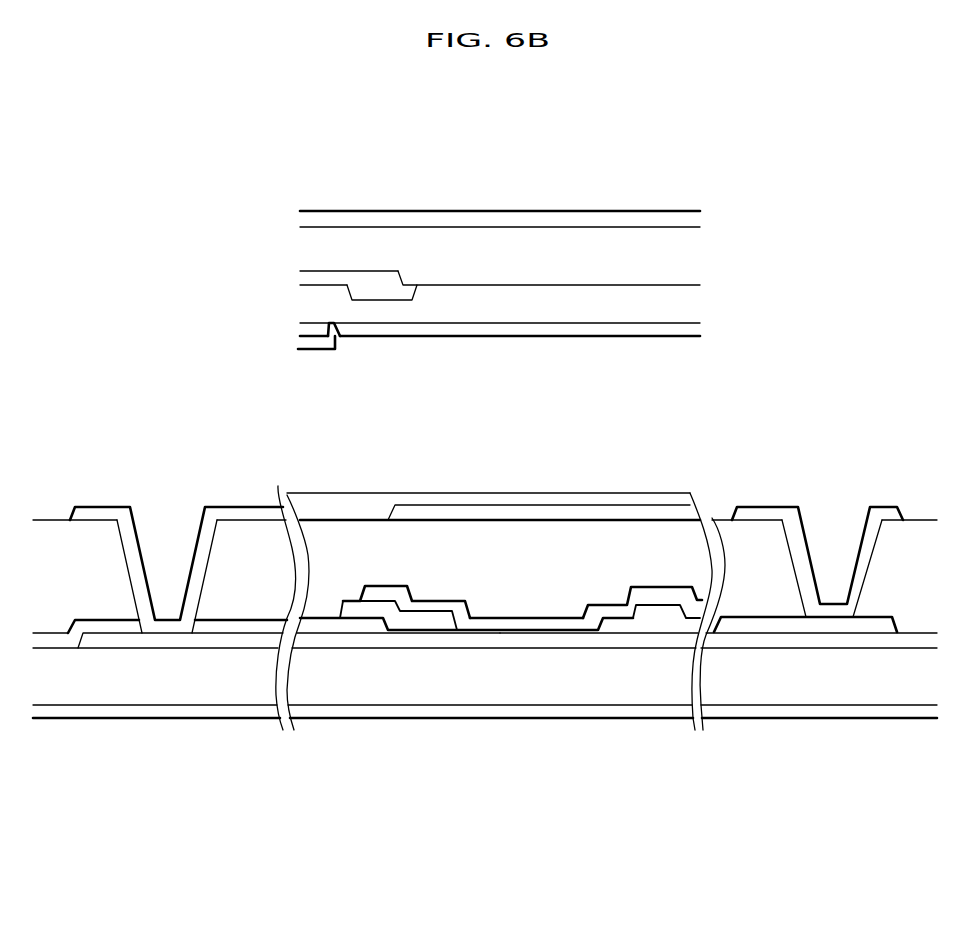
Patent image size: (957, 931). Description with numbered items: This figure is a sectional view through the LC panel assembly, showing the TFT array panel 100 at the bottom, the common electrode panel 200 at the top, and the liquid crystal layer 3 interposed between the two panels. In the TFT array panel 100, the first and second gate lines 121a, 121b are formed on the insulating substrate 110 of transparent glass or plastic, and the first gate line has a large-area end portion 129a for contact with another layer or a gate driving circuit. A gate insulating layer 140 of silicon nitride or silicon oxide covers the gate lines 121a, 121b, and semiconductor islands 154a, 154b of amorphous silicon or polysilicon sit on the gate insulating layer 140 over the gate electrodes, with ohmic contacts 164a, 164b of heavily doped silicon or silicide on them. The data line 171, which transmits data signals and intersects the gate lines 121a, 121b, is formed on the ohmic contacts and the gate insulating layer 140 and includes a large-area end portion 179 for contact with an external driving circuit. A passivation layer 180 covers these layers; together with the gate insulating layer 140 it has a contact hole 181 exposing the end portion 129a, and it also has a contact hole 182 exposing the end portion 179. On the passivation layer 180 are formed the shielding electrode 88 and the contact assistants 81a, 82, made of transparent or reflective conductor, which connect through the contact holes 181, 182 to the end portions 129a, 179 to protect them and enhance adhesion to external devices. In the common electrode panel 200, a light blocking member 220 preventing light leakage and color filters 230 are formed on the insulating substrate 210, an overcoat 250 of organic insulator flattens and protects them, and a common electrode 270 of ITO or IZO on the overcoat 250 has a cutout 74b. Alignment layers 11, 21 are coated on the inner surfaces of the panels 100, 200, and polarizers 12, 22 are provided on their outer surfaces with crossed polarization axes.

The common electrode panel 200 is at (695, 183).
The polarizer 22 is at (505, 218).
The insulating substrate 210 is at (564, 242).
The light blocking member 220 is at (433, 271).
The color filter 230 is at (334, 271).
The alignment layer 21 is at (522, 328).
The overcoat 250 is at (608, 310).
The common electrode 270 is at (311, 349).
The cutout 74b is at (340, 337).
The liquid crystal layer 3 is at (733, 380).
The TFT array panel 100 is at (507, 760).
The passivation layer 180 is at (52, 537).
The contact hole 181 is at (167, 530).
The contact assistant 81a is at (232, 510).
The gate insulating layer 140 is at (60, 642).
The end portion 129a is at (222, 640).
The insulating substrate 110 is at (113, 697).
The polarizer 12 is at (163, 713).
The alignment layer 11 is at (362, 505).
The shielding electrode 88 is at (543, 513).
The first gate line 121a is at (332, 643).
The second gate line 121b is at (615, 640).
The semiconductor island 154a is at (415, 630).
The ohmic contact 164a is at (442, 618).
The data line 171 is at (540, 628).
The ohmic contact 164b is at (684, 612).
The semiconductor island 154b is at (648, 617).
The end portion 179 is at (762, 625).
The contact assistant 82 is at (887, 500).
The contact hole 182 is at (833, 530).